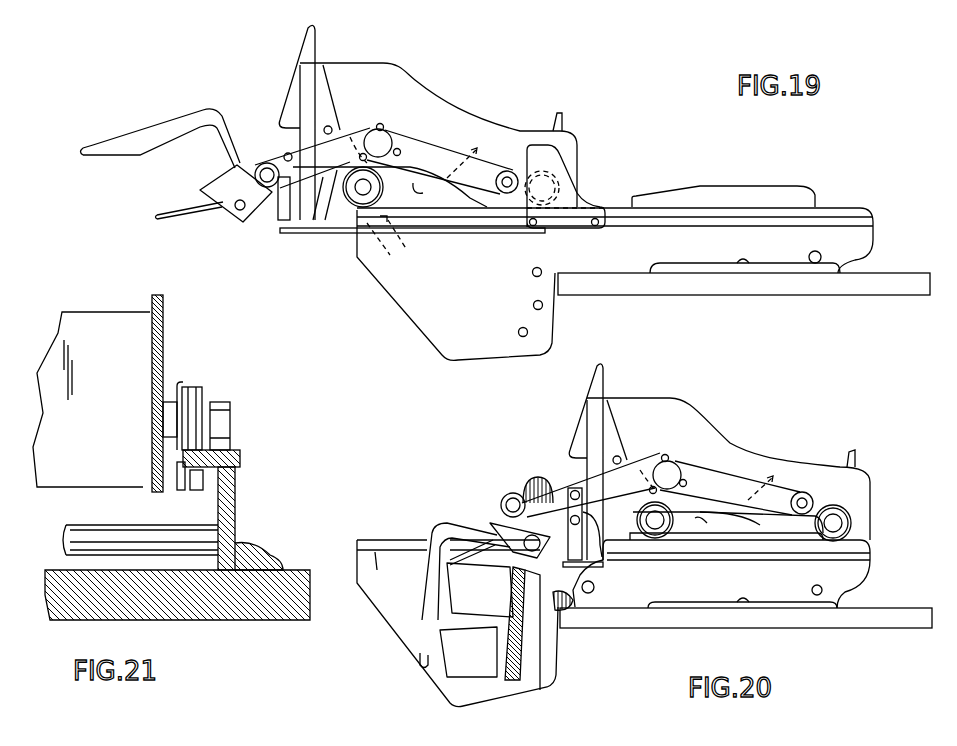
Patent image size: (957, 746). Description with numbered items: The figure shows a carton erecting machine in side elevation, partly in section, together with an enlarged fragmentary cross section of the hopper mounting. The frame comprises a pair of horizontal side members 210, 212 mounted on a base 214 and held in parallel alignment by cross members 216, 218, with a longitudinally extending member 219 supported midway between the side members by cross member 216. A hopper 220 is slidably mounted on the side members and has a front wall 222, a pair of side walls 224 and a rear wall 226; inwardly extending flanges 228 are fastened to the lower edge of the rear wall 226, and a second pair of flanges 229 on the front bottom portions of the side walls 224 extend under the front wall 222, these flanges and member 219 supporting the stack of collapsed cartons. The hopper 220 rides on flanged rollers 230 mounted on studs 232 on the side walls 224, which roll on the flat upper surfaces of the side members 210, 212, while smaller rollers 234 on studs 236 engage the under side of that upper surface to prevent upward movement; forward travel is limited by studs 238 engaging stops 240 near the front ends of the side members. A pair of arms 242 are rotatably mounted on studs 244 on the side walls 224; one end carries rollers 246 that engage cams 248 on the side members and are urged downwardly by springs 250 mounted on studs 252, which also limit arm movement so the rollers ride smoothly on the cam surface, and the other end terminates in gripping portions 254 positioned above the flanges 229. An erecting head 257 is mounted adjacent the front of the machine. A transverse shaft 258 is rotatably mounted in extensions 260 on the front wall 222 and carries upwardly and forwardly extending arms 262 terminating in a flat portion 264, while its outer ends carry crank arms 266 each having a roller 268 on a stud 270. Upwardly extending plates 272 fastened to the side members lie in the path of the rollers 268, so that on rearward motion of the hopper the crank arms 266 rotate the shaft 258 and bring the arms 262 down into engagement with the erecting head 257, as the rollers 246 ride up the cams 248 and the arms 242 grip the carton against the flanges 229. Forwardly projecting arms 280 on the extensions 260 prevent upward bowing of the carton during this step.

In FIG. 19, the side member 210 is at (490, 315).
In FIG. 20, the side member 210 is at (865, 580).
In FIG. 21, the side member 210 is at (238, 507).
In FIG. 20, the side member 212 is at (402, 625).
In FIG. 19, the base 214 is at (888, 296).
In FIG. 20, the base 214 is at (910, 622).
In FIG. 21, the base 214 is at (267, 613).
In FIG. 20, the cross member 216 is at (591, 593).
In FIG. 21, the cross member 218 is at (85, 533).
In FIG. 20, the longitudinally extending member 219 is at (573, 607).
In FIG. 19, the hopper 220 is at (377, 63).
In FIG. 20, the hopper 220 is at (682, 407).
In FIG. 19, the front wall 222 is at (305, 45).
In FIG. 20, the front wall 222 is at (593, 388).
In FIG. 19, the side wall 224 is at (427, 96).
In FIG. 20, the side wall 224 is at (745, 450).
In FIG. 21, the side wall 224 is at (165, 313).
In FIG. 19, the rear wall 226 is at (566, 120).
In FIG. 20, the rear wall 226 is at (855, 458).
In FIG. 21, the rear wall 226 is at (88, 318).
In FIG. 21, the inwardly extending flange 228 is at (77, 480).
In FIG. 19, the inwardly extending flange 229 is at (298, 233).
In FIG. 20, the inwardly extending flange 229 is at (590, 568).
In FIG. 19, the flanged roller 230 is at (560, 178).
In FIG. 20, the flanged roller 230 is at (855, 523).
In FIG. 21, the flanged roller 230 is at (191, 386).
In FIG. 21, the stud 232 is at (168, 402).
In FIG. 21, the roller 234 is at (177, 490).
In FIG. 21, the stud 236 is at (203, 490).
In FIG. 19, the stud 238 is at (412, 239).
In FIG. 19, the stop 240 is at (392, 252).
In FIG. 20, the stop 240 is at (375, 552).
In FIG. 19, the arm 242 is at (448, 150).
In FIG. 20, the arm 242 is at (773, 492).
In FIG. 19, the stud 244 is at (385, 142).
In FIG. 20, the stud 244 is at (670, 470).
In FIG. 19, the roller 246 is at (507, 170).
In FIG. 20, the roller 246 is at (807, 493).
In FIG. 19, the cam 248 is at (777, 193).
In FIG. 20, the cam 248 is at (782, 533).
In FIG. 21, the cam 248 is at (228, 420).
In FIG. 19, the spring 250 is at (390, 187).
In FIG. 20, the spring 250 is at (696, 526).
In FIG. 19, the stud 252 is at (331, 129).
In FIG. 20, the stud 252 is at (620, 458).
In FIG. 19, the gripping portion 254 is at (277, 222).
In FIG. 20, the gripping portion 254 is at (585, 518).
In FIG. 20, the erecting head 257 is at (463, 657).
In FIG. 19, the transverse shaft 258 is at (238, 209).
In FIG. 20, the transverse shaft 258 is at (532, 551).
In FIG. 19, the extension 260 is at (217, 190).
In FIG. 19, the arm 262 is at (178, 123).
In FIG. 20, the arm 262 is at (435, 535).
In FIG. 19, the flat portion 264 is at (112, 153).
In FIG. 20, the flat portion 264 is at (420, 657).
In FIG. 19, the crank arm 266 is at (242, 218).
In FIG. 20, the crank arm 266 is at (513, 523).
In FIG. 19, the roller 268 is at (257, 113).
In FIG. 20, the roller 268 is at (507, 495).
In FIG. 19, the stud 270 is at (267, 170).
In FIG. 20, the stud 270 is at (510, 493).
In FIG. 19, the plate 272 is at (548, 155).
In FIG. 20, the plate 272 is at (538, 477).
In FIG. 19, the forwardly projecting arm 280 is at (183, 207).
In FIG. 20, the forwardly projecting arm 280 is at (468, 560).